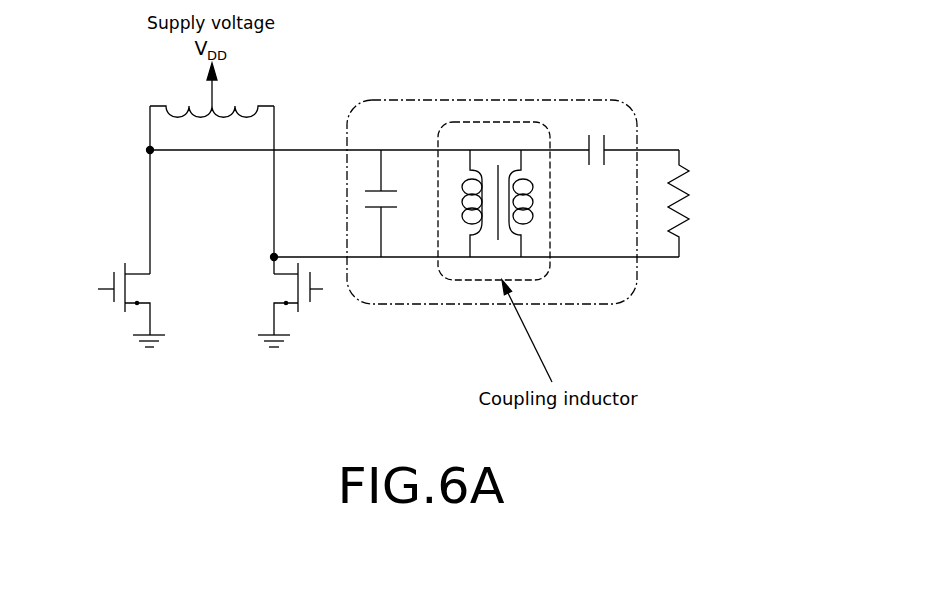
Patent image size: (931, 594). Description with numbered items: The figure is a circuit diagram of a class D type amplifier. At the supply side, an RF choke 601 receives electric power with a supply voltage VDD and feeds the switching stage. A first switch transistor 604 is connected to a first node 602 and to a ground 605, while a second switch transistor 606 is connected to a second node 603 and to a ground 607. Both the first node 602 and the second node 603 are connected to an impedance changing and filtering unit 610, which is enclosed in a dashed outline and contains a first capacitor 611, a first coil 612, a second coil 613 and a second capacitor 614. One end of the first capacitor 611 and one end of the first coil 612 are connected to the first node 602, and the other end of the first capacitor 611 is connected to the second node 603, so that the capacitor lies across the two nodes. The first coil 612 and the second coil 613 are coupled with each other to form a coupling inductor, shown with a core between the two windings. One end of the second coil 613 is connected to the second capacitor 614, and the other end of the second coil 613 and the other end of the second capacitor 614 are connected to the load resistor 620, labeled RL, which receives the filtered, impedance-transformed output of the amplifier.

The RF choke 601 is at (236, 105).
The first node 602 is at (146, 150).
The second node 603 is at (270, 257).
The first switch transistor 604 is at (113, 300).
The ground 605 is at (156, 343).
The second switch transistor 606 is at (312, 305).
The ground 607 is at (280, 343).
The impedance changing and filtering unit 610 is at (491, 99).
The first capacitor 611 is at (398, 207).
The first coil 612 is at (483, 225).
The second coil 613 is at (534, 222).
The second capacitor 614 is at (596, 168).
The load resistor 620 is at (689, 220).